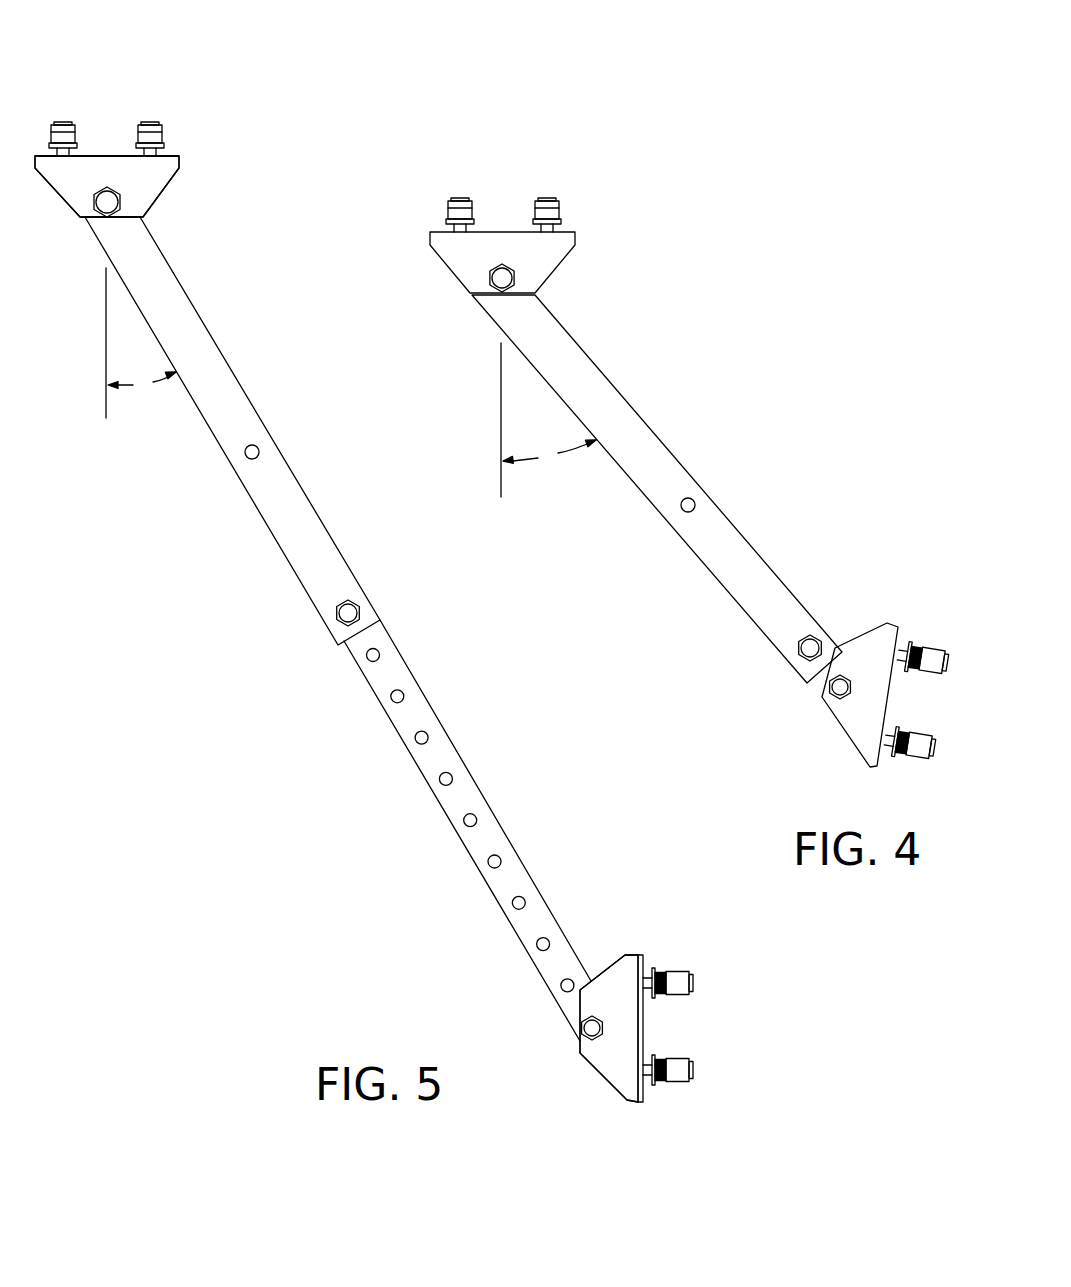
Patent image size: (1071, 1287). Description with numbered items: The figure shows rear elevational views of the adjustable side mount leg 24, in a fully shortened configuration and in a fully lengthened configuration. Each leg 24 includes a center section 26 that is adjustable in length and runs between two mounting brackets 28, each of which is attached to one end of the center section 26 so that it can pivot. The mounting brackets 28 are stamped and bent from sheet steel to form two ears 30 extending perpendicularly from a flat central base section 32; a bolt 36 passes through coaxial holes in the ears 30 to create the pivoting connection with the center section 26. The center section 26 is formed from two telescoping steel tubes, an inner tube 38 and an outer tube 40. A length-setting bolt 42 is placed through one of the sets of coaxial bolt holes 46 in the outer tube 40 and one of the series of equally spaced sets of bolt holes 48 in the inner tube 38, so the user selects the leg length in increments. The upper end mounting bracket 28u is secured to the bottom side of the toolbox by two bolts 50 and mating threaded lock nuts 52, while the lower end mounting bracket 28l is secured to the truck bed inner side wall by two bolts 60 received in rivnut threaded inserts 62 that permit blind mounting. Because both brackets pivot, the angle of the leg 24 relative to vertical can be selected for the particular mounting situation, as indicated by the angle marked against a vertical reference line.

In FIG. 5, the leg 24 is at (305, 250).
In FIG. 4, the leg 24 is at (750, 273).
In FIG. 5, the center section 26 is at (395, 548).
In FIG. 4, the center section 26 is at (767, 452).
In FIG. 4, the mounting bracket 28 is at (545, 262).
In FIG. 5, the upper end mounting bracket 28u is at (162, 177).
In FIG. 5, the lower end mounting bracket 28l is at (625, 948).
In FIG. 5, the ear 30 is at (58, 177).
In FIG. 5, the flat central base section 32 is at (103, 152).
In FIG. 5, the bolt 36 is at (115, 213).
In FIG. 4, the bolt 36 is at (495, 278).
In FIG. 5, the inner tube 38 is at (515, 868).
In FIG. 5, the outer tube 40 is at (195, 350).
In FIG. 4, the outer tube 40 is at (605, 373).
In FIG. 5, the bolt 42 is at (335, 613).
In FIG. 4, the bolt 42 is at (798, 652).
In FIG. 5, the bolt holes 46 is at (252, 445).
In FIG. 4, the bolt holes 46 is at (680, 503).
In FIG. 5, the bolt holes 48 is at (454, 776).
In FIG. 5, the bolt 50 is at (153, 150).
In FIG. 4, the bolt 50 is at (455, 228).
In FIG. 5, the threaded lock nut 52 is at (73, 137).
In FIG. 4, the threaded lock nut 52 is at (468, 210).
In FIG. 5, the bolt 60 is at (646, 975).
In FIG. 5, the rivnut threaded insert 62 is at (675, 980).
In FIG. 4, the rivnut threaded insert 62 is at (932, 657).